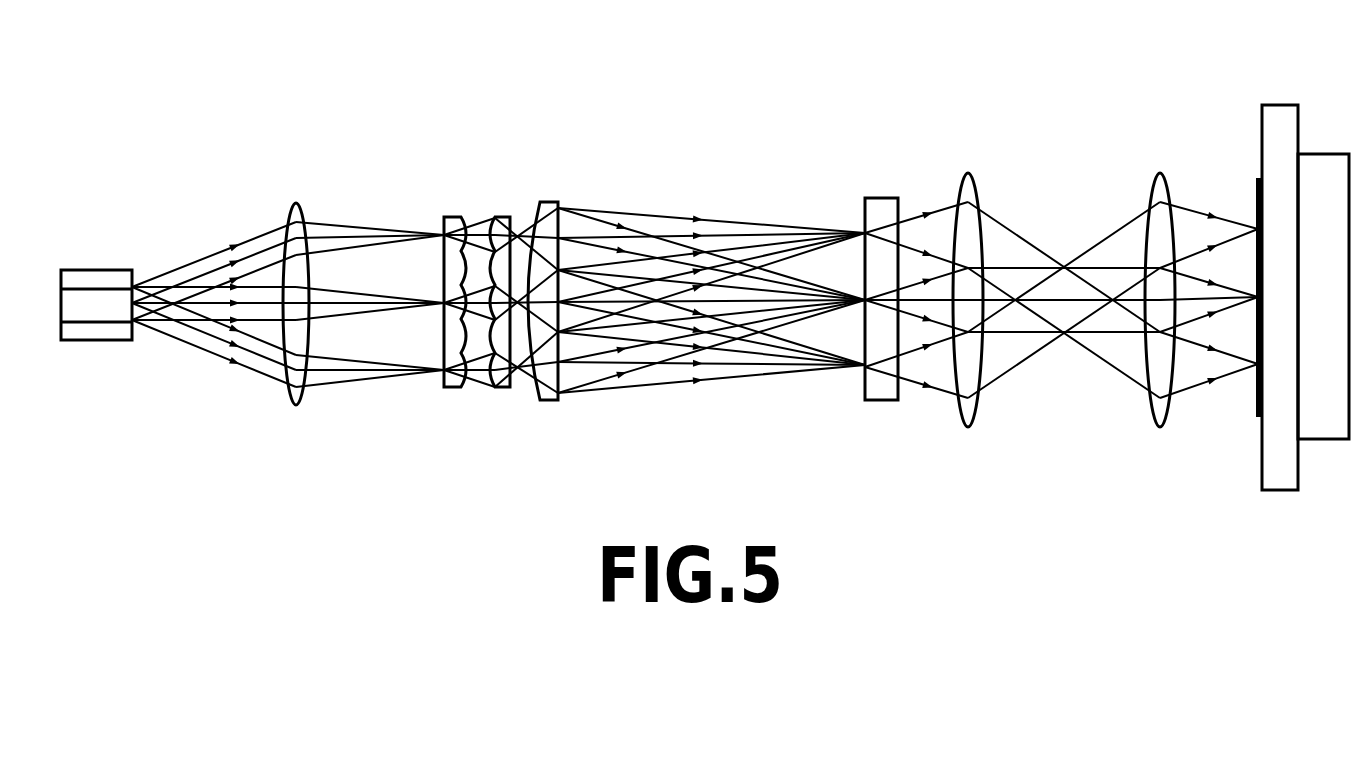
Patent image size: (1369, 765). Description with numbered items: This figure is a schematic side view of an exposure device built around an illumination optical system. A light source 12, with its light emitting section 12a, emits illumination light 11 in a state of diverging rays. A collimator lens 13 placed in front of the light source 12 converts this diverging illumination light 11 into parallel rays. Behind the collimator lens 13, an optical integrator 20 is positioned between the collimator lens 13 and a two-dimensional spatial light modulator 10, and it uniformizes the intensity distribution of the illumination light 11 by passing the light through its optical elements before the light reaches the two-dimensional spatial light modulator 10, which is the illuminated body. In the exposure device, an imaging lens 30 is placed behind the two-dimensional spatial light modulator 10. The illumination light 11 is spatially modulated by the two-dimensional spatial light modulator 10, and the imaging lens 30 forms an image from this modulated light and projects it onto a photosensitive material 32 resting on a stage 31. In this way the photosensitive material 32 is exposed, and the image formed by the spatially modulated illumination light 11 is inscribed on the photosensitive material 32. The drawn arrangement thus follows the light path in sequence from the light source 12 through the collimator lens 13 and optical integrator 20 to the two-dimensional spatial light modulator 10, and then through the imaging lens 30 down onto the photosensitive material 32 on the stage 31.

The two-dimensional spatial light modulator 10 is at (882, 208).
The illumination light 11 is at (217, 250).
The light source 12 is at (102, 268).
The light emitting section 12a is at (97, 305).
The collimator lens 13 is at (297, 207).
The optical integrator 20 is at (562, 190).
The imaging lens 30 is at (957, 160).
The stage 31 is at (1280, 125).
The photosensitive material 32 is at (1257, 192).